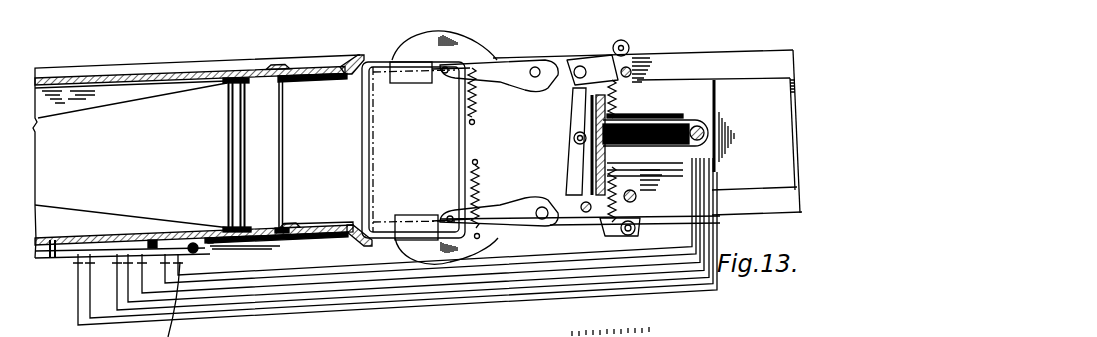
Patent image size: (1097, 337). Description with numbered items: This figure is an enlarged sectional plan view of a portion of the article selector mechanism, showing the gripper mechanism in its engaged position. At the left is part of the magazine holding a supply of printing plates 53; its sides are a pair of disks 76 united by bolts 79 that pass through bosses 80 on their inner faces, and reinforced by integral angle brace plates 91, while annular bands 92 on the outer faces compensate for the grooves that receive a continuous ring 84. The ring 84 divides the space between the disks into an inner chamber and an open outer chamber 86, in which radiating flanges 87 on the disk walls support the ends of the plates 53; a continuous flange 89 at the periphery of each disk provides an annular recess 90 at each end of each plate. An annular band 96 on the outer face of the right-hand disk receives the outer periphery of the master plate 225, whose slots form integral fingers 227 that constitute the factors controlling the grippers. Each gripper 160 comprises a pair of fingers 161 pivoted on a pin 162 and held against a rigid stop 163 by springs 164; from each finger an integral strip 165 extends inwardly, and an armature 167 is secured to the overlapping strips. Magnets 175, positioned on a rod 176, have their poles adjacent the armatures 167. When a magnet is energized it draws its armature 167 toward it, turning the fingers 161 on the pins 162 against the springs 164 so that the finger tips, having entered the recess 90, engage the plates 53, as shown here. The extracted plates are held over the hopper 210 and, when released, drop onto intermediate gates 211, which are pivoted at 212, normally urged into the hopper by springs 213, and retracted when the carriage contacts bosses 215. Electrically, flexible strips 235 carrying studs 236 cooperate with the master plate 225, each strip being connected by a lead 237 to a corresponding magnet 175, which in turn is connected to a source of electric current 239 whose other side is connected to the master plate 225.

The printing plates 53 is at (712, 336).
The disks 76 is at (136, 72).
The bolts 79 is at (246, 136).
The bosses 80 is at (222, 84).
The ring 84 is at (278, 160).
The outer chamber 86 is at (316, 135).
The radiating flanges 87 is at (312, 82).
The continuous flange 89 is at (346, 60).
The annular recess 90 is at (340, 238).
The angle brace plates 91 is at (65, 86).
The annular bands 92 is at (278, 64).
The annular band 96 is at (209, 238).
The gripper 160 is at (621, 125).
The gripper fingers 161 is at (478, 63).
The pin 162 is at (580, 66).
The rigid stop 163 is at (573, 100).
The springs 164 is at (620, 90).
The strip 165 is at (572, 136).
The armature 167 is at (575, 156).
The magnets 175 is at (672, 124).
The rod 176 is at (718, 120).
The hopper 210 is at (374, 62).
The intermediate gates 211 is at (444, 147).
The pivot 212 is at (540, 206).
The springs 213 is at (476, 120).
The bosses 215 is at (492, 66).
The master plate 225 is at (72, 258).
The finger 227 is at (150, 238).
The flexible strips 235 is at (177, 299).
The studs 236 is at (190, 243).
The lead 237 is at (242, 290).
The source of electric current 239 is at (655, 334).